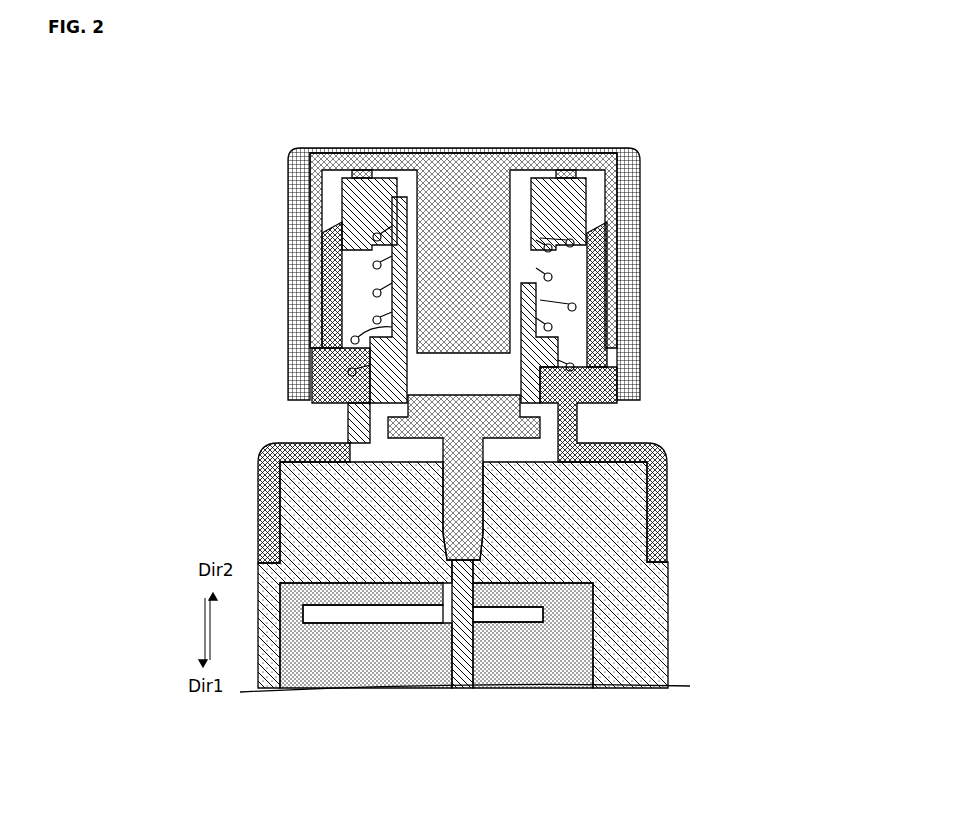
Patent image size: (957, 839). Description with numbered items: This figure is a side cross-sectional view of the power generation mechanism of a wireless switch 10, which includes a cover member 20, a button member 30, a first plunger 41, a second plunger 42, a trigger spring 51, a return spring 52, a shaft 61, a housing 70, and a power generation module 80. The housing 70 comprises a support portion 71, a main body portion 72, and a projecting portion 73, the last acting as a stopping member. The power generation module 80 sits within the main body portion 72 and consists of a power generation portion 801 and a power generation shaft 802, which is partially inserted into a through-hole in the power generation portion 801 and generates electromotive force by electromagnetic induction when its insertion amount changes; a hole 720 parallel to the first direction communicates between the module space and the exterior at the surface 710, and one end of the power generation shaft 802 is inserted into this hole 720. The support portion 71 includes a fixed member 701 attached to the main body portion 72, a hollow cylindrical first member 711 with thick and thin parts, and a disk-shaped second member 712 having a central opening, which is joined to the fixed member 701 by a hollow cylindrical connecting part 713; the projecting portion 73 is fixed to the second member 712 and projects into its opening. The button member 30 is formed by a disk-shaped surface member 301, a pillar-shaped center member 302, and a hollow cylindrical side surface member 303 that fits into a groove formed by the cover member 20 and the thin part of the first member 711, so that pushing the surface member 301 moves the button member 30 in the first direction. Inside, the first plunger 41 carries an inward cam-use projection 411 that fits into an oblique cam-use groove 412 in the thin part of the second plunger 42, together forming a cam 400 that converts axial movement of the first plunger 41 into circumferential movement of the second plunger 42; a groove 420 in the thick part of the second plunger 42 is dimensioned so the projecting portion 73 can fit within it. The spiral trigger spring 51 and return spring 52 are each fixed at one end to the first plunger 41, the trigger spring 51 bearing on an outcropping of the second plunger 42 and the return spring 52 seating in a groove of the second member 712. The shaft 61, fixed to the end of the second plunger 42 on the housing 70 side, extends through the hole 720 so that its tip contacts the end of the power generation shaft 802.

The wireless switch 10 is at (705, 100).
The cover member 20 is at (292, 177).
The button member 30 is at (628, 112).
The surface member 301 is at (533, 154).
The center member 302 is at (463, 190).
The side surface member 303 is at (612, 153).
The first plunger 41 is at (590, 190).
The cam 400 is at (692, 227).
The cam-use projection 411 is at (600, 244).
The cam-use groove 412 is at (600, 268).
The trigger spring 51 is at (342, 213).
The return spring 52 is at (345, 230).
The second plunger 42 is at (312, 384).
The groove 420 is at (318, 398).
The projecting portion 73 is at (352, 418).
The surface 710 is at (320, 442).
The shaft 61 is at (262, 468).
The first member 711 is at (640, 333).
The second member 712 is at (640, 393).
The connecting part 713 is at (583, 425).
The fixed member 701 is at (660, 458).
The support portion 71 is at (712, 322).
The housing 70 is at (754, 690).
The main body portion 72 is at (487, 572).
The hole 720 is at (478, 578).
The power generation module 80 is at (533, 742).
The power generation portion 801 is at (510, 694).
The power generation shaft 802 is at (462, 694).